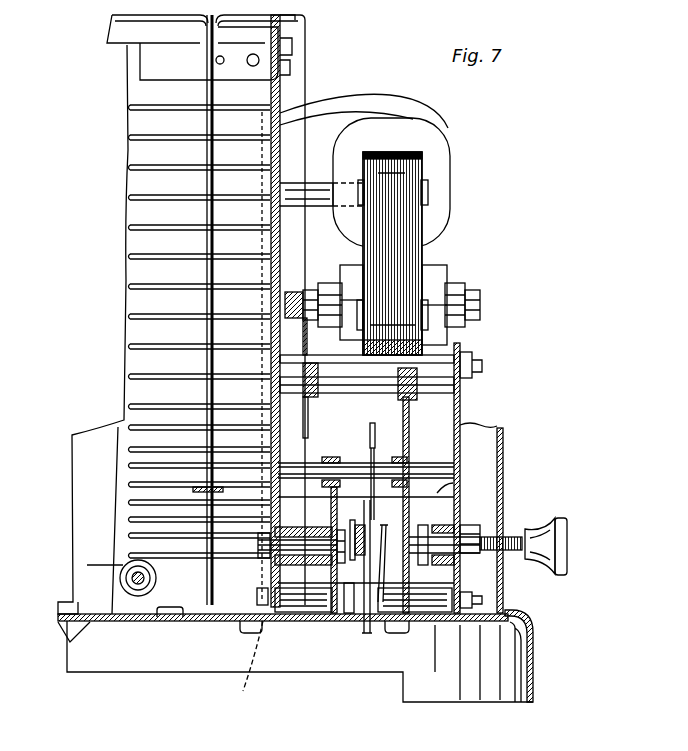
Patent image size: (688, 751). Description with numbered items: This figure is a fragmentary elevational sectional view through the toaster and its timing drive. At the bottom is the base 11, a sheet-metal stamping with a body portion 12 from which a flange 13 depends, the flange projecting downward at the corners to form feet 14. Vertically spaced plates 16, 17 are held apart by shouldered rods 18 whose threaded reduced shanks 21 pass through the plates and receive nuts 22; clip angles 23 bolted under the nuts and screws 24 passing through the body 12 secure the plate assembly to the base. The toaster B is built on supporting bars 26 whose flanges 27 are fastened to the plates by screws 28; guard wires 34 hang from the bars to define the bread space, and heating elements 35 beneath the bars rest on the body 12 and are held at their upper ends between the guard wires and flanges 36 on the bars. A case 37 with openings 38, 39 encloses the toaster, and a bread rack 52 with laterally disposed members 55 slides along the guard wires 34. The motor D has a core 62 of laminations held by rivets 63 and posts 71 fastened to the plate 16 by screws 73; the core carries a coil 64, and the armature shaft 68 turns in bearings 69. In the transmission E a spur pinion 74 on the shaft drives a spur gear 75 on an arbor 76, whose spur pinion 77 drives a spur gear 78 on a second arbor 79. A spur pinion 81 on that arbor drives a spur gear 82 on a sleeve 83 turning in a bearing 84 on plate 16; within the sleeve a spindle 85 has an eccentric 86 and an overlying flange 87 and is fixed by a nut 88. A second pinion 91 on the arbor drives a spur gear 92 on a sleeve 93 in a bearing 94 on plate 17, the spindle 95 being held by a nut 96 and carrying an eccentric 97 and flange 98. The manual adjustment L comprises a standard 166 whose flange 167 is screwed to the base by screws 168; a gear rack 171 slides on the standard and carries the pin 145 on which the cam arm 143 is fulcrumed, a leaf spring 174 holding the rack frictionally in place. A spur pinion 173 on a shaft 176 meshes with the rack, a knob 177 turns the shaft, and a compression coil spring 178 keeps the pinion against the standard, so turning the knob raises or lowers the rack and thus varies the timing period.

The base 11 is at (533, 662).
The body portion 12 is at (90, 618).
The flange 13 is at (86, 660).
The feet 14 is at (492, 690).
The plate 16 is at (283, 95).
The plate 17 is at (462, 410).
The shouldered rod 18 is at (460, 352).
The threaded reduced shank 21 is at (476, 368).
The nut 22 is at (472, 358).
The clip angle 23 is at (230, 659).
The screw 24 is at (256, 634).
The supporting bar 26 is at (112, 17).
The flange 27 is at (283, 30).
The screw 28 is at (292, 44).
The guard wire 34 is at (207, 148).
The heating element 35 is at (140, 112).
The flange 36 is at (137, 30).
The case 37 is at (505, 446).
The opening 38 is at (167, 614).
The opening 39 is at (505, 605).
The bread rack 52 is at (195, 484).
The laterally disposed member 55 is at (190, 490).
The core 62 is at (412, 222).
The rivet 63 is at (427, 190).
The coil 64 is at (428, 133).
The armature shaft 68 is at (305, 303).
The bearing 69 is at (330, 290).
The post 71 is at (300, 190).
The screw 73 is at (262, 200).
The spur pinion 74 is at (296, 293).
The spur gear 75 is at (298, 338).
The arbor 76 is at (295, 380).
The spur pinion 77 is at (415, 388).
The spur gear 78 is at (410, 440).
The arbor 79 is at (340, 470).
The spur pinion 81 is at (330, 457).
The spur gear 82 is at (328, 498).
The sleeve 83 is at (300, 530).
The bearing 84 is at (312, 534).
The spindle 85 is at (270, 560).
The eccentric 86 is at (340, 528).
The flange 87 is at (333, 560).
The nut 88 is at (255, 548).
The pinion 91 is at (425, 466).
The spur gear 92 is at (445, 490).
The sleeve 93 is at (460, 527).
The bearing 94 is at (455, 550).
The spindle 95 is at (478, 530).
The nut 96 is at (483, 540).
The eccentric 97 is at (425, 548).
The flange 98 is at (417, 516).
The arm 143 is at (356, 592).
The pin 145 is at (366, 528).
The standard 166 is at (372, 423).
The flange 167 is at (403, 620).
The screw 168 is at (389, 634).
The gear rack 171 is at (364, 596).
The spur pinion 173 is at (384, 594).
The leaf spring 174 is at (372, 536).
The shaft 176 is at (512, 550).
The knob 177 is at (563, 542).
The compression coil spring 178 is at (522, 535).
The toaster B is at (118, 66).
The motor D is at (422, 152).
The transmission E is at (248, 447).
The manual adjustment L is at (567, 560).